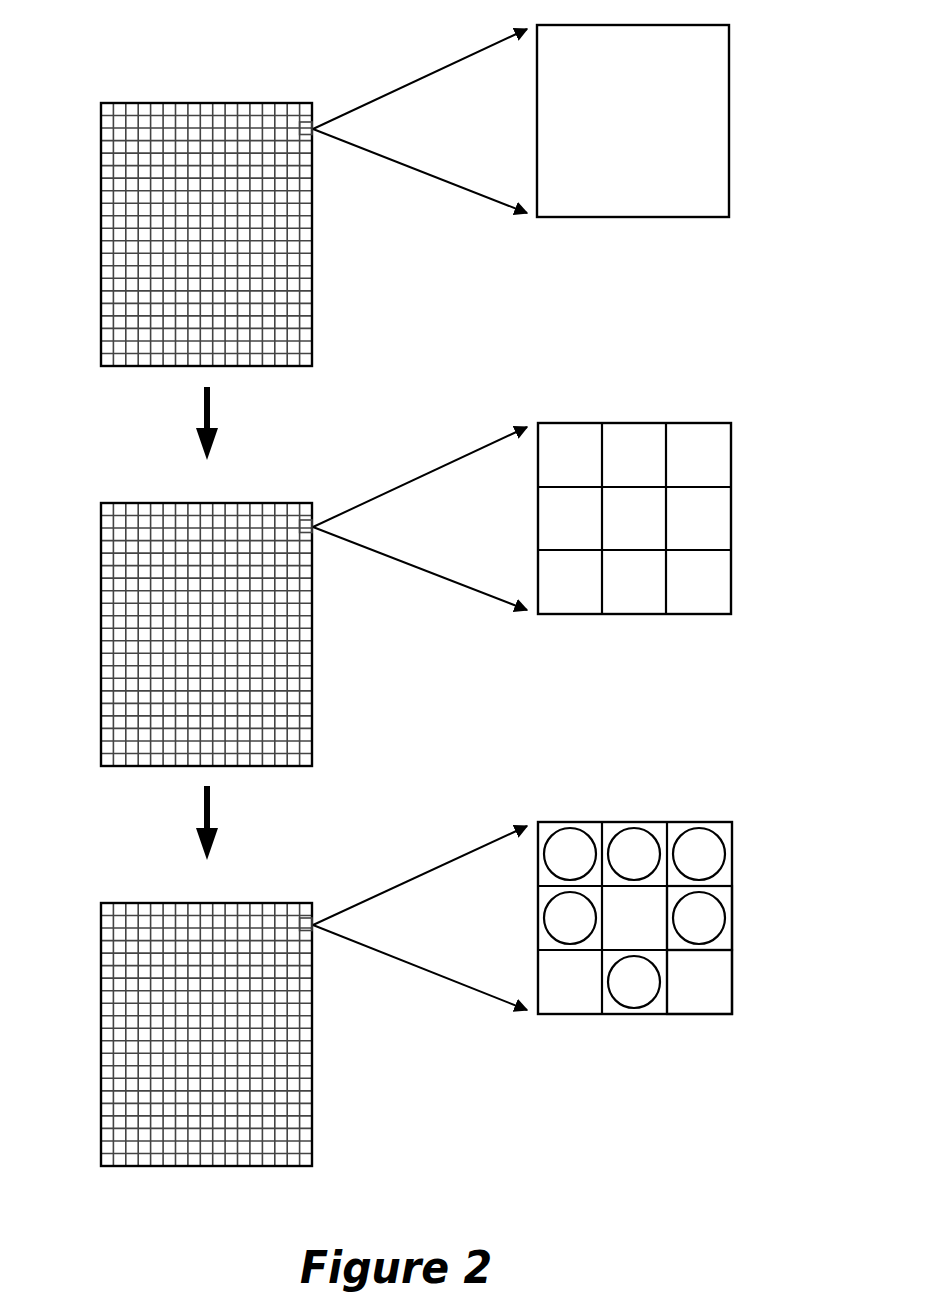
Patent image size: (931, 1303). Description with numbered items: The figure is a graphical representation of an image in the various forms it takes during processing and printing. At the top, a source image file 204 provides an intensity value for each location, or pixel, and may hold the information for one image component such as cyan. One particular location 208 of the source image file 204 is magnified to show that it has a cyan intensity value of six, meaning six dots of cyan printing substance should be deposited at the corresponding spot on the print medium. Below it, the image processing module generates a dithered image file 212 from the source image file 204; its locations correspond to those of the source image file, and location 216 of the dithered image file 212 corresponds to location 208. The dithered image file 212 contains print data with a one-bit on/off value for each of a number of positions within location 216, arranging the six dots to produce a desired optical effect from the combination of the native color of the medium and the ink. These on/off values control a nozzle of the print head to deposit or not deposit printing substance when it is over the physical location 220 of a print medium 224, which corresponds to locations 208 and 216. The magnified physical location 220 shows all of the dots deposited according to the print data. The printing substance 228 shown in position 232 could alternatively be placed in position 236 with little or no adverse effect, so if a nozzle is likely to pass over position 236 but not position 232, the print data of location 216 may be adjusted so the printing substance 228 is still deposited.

The source image file 204 is at (146, 103).
The location 208 is at (308, 129).
The dithered image file 212 is at (145, 503).
The location 216 is at (310, 527).
The physical location 220 is at (308, 925).
The print medium 224 is at (145, 903).
The printing substance 228 is at (712, 913).
The position 232 is at (733, 932).
The position 236 is at (733, 987).